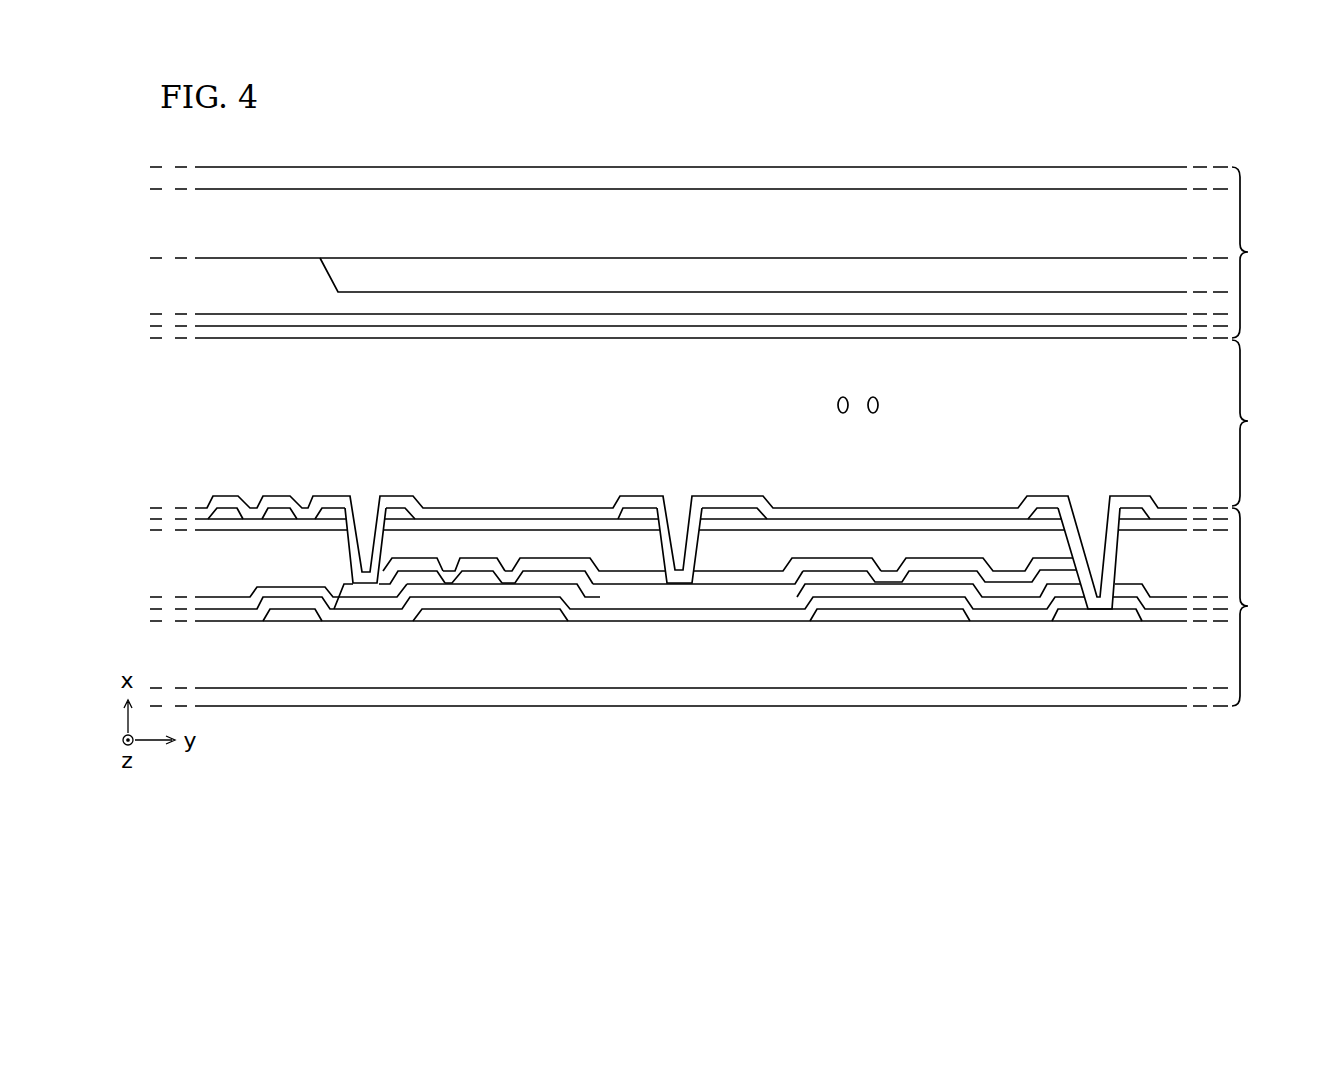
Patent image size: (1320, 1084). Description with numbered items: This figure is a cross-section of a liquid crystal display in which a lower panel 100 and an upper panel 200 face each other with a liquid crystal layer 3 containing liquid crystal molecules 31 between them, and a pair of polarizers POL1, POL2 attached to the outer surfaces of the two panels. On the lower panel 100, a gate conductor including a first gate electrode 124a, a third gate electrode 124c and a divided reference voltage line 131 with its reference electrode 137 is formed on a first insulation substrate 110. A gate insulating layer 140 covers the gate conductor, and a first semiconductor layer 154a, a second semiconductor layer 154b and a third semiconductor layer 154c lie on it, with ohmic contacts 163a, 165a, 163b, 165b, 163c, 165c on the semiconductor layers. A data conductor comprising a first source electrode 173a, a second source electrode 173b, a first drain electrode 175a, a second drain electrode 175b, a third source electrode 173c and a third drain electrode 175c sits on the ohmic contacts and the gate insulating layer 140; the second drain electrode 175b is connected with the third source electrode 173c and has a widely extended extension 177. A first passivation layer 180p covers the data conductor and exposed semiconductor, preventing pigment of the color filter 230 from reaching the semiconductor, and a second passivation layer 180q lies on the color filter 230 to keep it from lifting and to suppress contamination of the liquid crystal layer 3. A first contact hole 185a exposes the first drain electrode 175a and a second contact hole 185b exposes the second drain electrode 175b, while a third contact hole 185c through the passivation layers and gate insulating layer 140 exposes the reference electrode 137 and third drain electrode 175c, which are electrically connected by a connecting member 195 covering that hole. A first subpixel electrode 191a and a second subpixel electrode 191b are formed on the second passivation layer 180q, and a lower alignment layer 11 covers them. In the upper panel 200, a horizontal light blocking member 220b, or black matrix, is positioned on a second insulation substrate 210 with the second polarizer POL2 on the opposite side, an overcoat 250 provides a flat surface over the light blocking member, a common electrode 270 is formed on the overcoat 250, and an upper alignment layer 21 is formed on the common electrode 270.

The second polarizer POL2 is at (403, 182).
The second insulation substrate 210 is at (522, 205).
The horizontal light blocking member 220b is at (643, 275).
The overcoat 250 is at (752, 305).
The common electrode 270 is at (862, 322).
The upper panel 200 is at (1258, 252).
The upper alignment layer 21 is at (1013, 330).
The liquid crystal layer 3 is at (1249, 423).
The liquid crystal molecules 31 is at (878, 405).
The lower panel 100 is at (1259, 607).
The lower alignment layer 11 is at (598, 510).
The first subpixel electrode 191a is at (228, 513).
The second subpixel electrode 191b is at (642, 512).
The first contact hole 185a is at (357, 535).
The second contact hole 185b is at (662, 543).
The third contact hole 185c is at (1060, 543).
The first source electrode 173a is at (470, 577).
The second source electrode 173b is at (488, 578).
The third source electrode 173c is at (830, 577).
The first drain electrode 175a is at (372, 587).
The second drain electrode 175b is at (540, 578).
The third drain electrode 175c is at (933, 577).
The extension 177 is at (732, 587).
The ohmic contact 163a is at (489, 578).
The ohmic contact 163b is at (520, 590).
The ohmic contact 163c is at (850, 587).
The ohmic contact 165a is at (350, 598).
The ohmic contact 165b is at (572, 612).
The ohmic contact 165c is at (947, 587).
The first semiconductor layer 154a is at (447, 605).
The second semiconductor layer 154b is at (548, 583).
The third semiconductor layer 154c is at (913, 593).
The first gate electrode 124a is at (455, 615).
The third gate electrode 124c is at (874, 613).
The divided reference voltage line 131 is at (296, 614).
The reference electrode 137 is at (1093, 614).
The gate insulating layer 140 is at (672, 612).
The first passivation layer 180p is at (238, 605).
The second passivation layer 180q is at (1167, 520).
The color filter 230 is at (1002, 543).
The connecting member 195 is at (1130, 510).
The first insulation substrate 110 is at (738, 668).
The first polarizer POL1 is at (1012, 700).